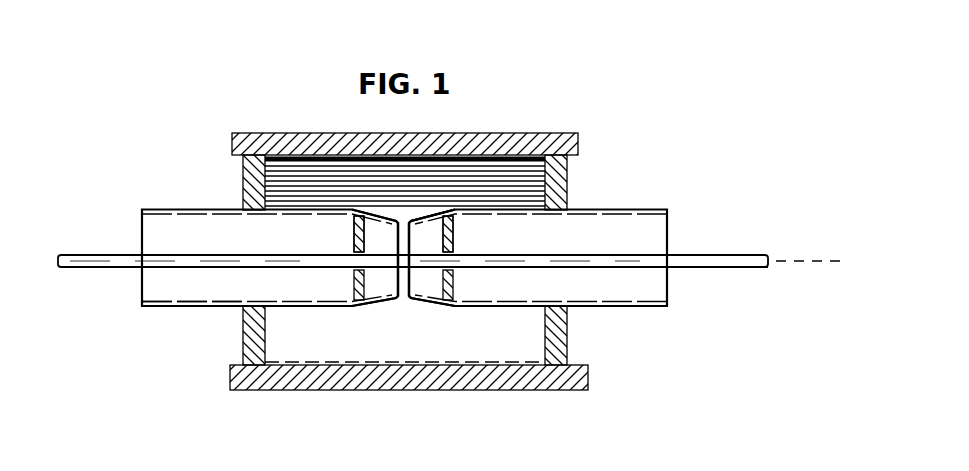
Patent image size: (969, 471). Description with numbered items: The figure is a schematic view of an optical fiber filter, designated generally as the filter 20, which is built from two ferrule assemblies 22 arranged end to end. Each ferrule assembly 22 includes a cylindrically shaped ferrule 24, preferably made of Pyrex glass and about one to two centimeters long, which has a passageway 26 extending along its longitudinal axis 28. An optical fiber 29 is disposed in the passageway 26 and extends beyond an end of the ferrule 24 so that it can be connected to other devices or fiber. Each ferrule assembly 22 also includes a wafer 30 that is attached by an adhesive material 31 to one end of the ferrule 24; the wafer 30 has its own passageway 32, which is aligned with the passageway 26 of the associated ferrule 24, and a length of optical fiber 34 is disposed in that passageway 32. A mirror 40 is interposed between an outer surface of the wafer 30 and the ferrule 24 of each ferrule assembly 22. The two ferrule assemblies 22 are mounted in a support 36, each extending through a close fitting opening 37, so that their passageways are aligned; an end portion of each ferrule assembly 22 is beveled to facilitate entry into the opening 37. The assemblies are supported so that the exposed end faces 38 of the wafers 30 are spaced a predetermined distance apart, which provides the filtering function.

The optical filter 20 is at (284, 98).
The ferrule assembly 22 is at (165, 208).
The ferrule 24 is at (637, 308).
The passageway 26 is at (652, 270).
The longitudinal axis 28 is at (815, 264).
The optical fiber 29 is at (774, 255).
The wafer 30 is at (432, 214).
The adhesive material 31 is at (352, 226).
The passageway 32 is at (413, 300).
The optical fiber 34 is at (445, 240).
The support 36 is at (578, 143).
The opening 37 is at (240, 295).
The end face 38 is at (394, 226).
The mirror 40 is at (372, 306).